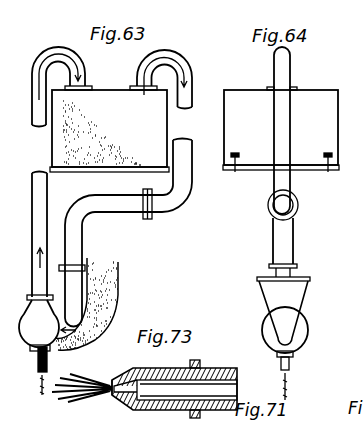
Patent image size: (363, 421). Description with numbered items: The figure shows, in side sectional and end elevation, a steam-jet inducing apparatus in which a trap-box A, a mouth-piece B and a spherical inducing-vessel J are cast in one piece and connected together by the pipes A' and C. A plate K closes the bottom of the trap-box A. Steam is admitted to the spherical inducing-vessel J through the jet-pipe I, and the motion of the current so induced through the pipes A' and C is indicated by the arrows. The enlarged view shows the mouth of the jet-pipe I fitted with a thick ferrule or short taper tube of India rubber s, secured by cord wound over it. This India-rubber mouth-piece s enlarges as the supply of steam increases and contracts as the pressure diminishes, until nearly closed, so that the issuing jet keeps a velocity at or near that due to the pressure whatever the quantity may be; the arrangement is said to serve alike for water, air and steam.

In FIG. 63, the trap-box A is at (122, 108).
In FIG. 64, the trap-box A is at (281, 126).
In FIG. 63, the pipe A' is at (123, 245).
In FIG. 64, the pipe A' is at (283, 162).
In FIG. 63, the pipe C is at (56, 173).
In FIG. 63, the bottom plate K is at (109, 177).
In FIG. 64, the bottom plate K is at (281, 170).
In FIG. 64, the mouth-piece B is at (283, 311).
In FIG. 63, the spherical inducing-vessel J is at (39, 325).
In FIG. 64, the spherical inducing-vessel J is at (285, 332).
In FIG. 63, the jet-pipe I is at (36, 371).
In FIG. 64, the jet-pipe I is at (280, 378).
In FIG. 73, the jet-pipe I is at (145, 390).
In FIG. 73, the India-rubber ferrule s is at (114, 381).